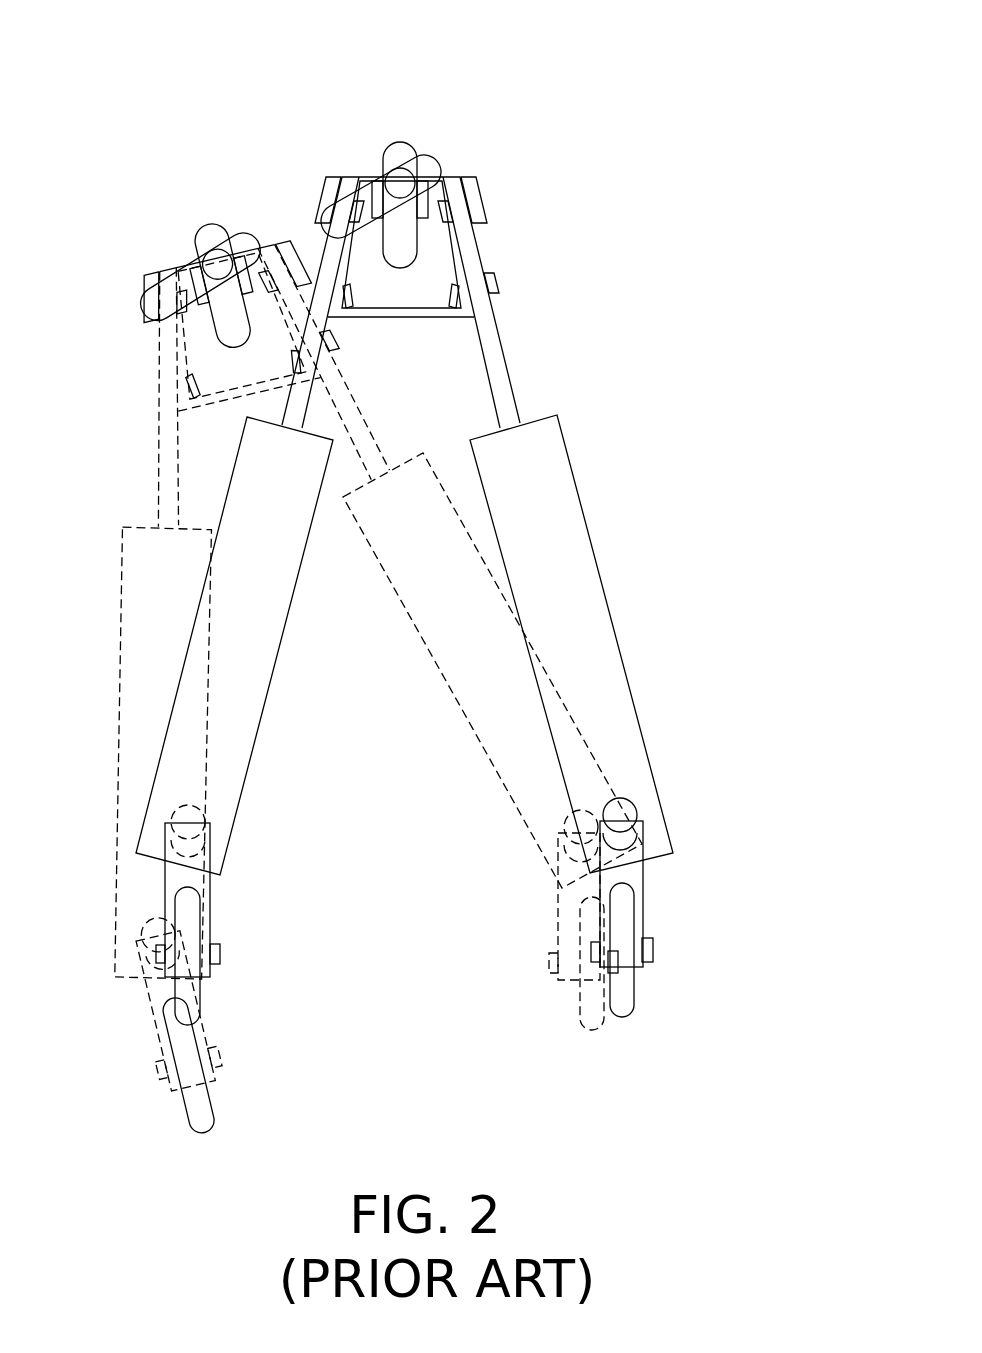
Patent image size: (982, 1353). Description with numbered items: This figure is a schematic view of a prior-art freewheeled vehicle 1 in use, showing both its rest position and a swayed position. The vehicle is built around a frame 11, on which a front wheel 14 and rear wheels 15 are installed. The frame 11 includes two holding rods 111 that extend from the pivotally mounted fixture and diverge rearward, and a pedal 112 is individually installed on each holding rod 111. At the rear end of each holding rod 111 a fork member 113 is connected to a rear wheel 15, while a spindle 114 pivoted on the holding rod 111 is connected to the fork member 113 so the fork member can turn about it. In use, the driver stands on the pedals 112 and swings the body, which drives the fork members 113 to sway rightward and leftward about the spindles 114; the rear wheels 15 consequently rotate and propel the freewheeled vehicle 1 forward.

The freewheeled vehicle 1 is at (148, 90).
The frame 11 is at (507, 308).
The holding rod 111 is at (497, 383).
The pedal 112 is at (567, 605).
The fork member 113 is at (633, 873).
The spindle 114 is at (632, 810).
The front wheel 14 is at (400, 153).
The rear wheel 15 is at (623, 997).